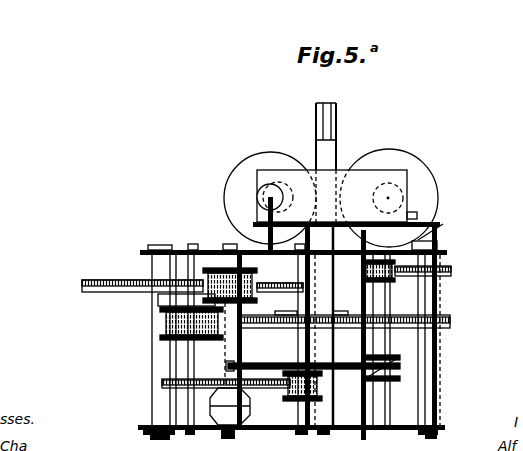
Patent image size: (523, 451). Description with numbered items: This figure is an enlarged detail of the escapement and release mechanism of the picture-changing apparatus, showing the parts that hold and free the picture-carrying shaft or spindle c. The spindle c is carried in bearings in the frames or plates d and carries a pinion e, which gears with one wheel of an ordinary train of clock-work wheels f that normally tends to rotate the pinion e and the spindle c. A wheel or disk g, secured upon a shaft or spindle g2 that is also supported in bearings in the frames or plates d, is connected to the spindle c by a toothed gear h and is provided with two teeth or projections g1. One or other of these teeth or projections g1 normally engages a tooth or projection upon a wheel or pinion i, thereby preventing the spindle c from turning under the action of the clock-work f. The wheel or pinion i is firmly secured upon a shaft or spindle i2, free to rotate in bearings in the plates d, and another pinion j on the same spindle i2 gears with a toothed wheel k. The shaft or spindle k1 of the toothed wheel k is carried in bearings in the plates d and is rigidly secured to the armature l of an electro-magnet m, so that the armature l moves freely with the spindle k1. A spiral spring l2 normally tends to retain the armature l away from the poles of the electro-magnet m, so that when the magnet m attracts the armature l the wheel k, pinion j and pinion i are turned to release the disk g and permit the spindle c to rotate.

The electro-magnet m is at (332, 187).
The armature l is at (283, 190).
The spiral spring l2 is at (262, 193).
The pinion e is at (214, 268).
The frames or plates d is at (301, 335).
The toothed wheel k is at (452, 270).
The shaft or spindle k1 is at (422, 304).
The train of clock-work wheels f is at (456, 321).
The shaft or spindle g2 is at (302, 298).
The pinion j is at (390, 340).
The wheel or disk g is at (322, 385).
The shaft or spindle c is at (231, 339).
The teeth or projections g1 is at (228, 366).
The toothed gear h is at (262, 390).
The wheel or pinion i is at (381, 333).
The shaft or spindle i2 is at (380, 413).